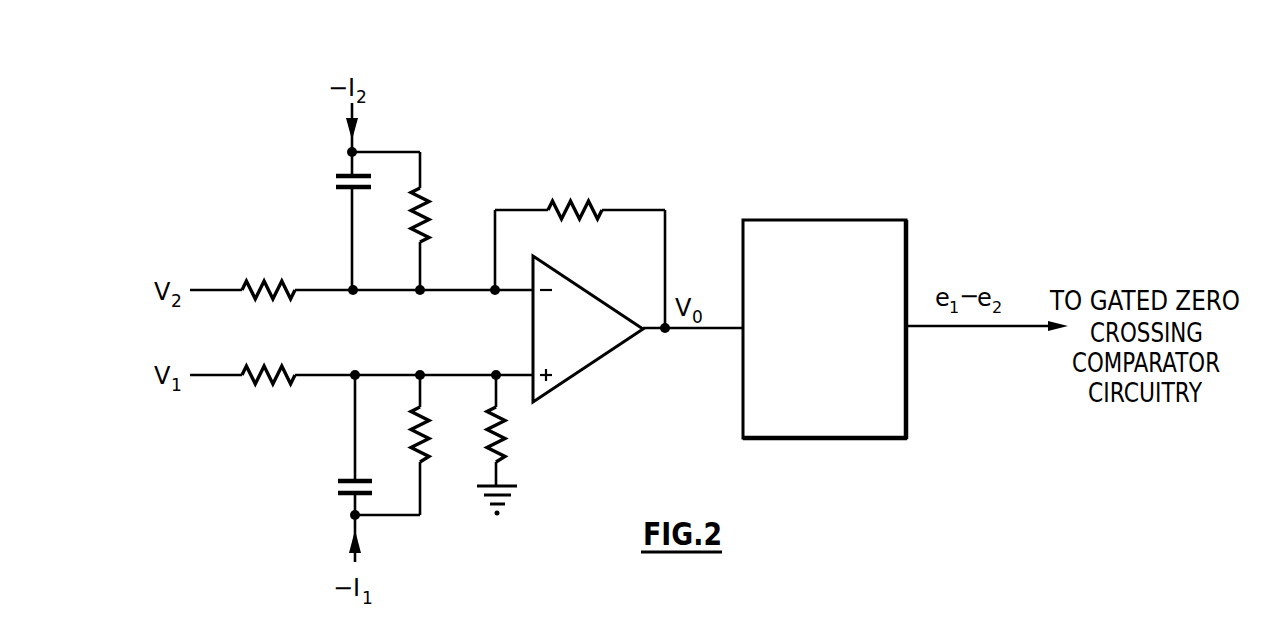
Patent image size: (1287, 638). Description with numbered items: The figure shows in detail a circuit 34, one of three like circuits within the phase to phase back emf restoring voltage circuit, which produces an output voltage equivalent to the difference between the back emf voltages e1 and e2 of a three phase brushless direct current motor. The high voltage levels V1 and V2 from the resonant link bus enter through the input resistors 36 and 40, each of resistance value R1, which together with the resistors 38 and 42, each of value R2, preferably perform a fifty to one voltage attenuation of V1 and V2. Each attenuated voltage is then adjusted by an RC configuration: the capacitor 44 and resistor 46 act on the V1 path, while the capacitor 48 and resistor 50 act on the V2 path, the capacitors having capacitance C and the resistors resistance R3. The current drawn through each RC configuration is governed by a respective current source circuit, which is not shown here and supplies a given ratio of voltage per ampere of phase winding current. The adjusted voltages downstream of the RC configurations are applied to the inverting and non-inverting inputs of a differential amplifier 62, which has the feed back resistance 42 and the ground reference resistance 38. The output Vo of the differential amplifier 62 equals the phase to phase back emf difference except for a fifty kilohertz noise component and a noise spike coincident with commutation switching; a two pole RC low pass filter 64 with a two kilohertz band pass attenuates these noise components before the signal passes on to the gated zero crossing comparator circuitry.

The circuit 34 is at (698, 469).
The input resistor 36 is at (290, 369).
The ground reference resistance 38 is at (503, 432).
The input resistor 40 is at (290, 284).
The feed back resistance 42 is at (596, 204).
The capacitor 44 is at (347, 480).
The resistor 46 is at (425, 412).
The capacitor 48 is at (338, 175).
The resistor 50 is at (418, 193).
The differential amplifier 62 is at (562, 273).
The two pole RC low pass filter 64 is at (833, 220).